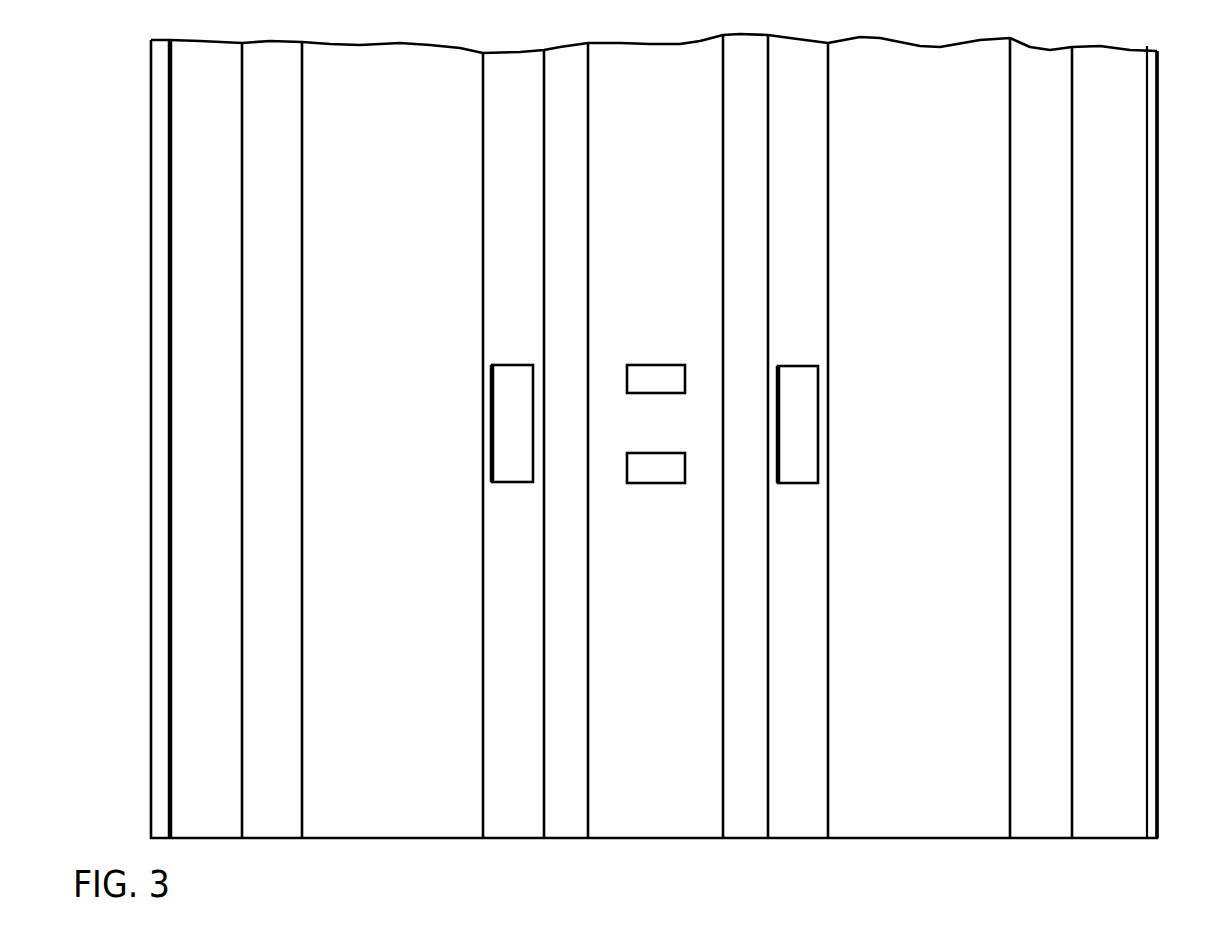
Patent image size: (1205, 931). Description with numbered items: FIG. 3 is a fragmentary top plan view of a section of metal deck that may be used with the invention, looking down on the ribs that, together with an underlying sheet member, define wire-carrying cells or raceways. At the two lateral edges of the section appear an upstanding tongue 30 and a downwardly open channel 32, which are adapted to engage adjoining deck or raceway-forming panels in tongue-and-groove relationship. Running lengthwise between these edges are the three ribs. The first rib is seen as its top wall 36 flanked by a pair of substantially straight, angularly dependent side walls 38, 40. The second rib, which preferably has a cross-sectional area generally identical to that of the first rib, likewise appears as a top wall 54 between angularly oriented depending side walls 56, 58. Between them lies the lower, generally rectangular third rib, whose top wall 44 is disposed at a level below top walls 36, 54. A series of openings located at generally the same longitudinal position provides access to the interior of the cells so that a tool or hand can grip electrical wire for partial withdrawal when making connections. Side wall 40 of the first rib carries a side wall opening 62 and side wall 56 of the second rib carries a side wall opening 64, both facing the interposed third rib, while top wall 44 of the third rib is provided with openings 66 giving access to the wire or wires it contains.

The upstanding tongue 30 is at (1148, 378).
The downwardly open channel 32 is at (160, 375).
The top wall 36 is at (408, 784).
The side wall 38 is at (283, 784).
The side wall 40 is at (529, 784).
The top wall 44 is at (668, 784).
The top wall 54 is at (928, 784).
The side wall 56 is at (813, 784).
The side wall 58 is at (1058, 784).
The side wall opening 62 is at (500, 383).
The side wall opening 64 is at (806, 390).
The openings 66 is at (643, 385).